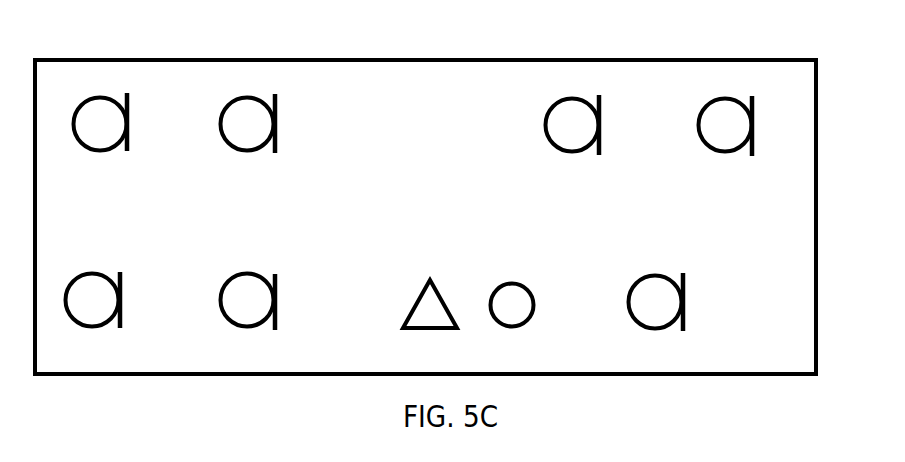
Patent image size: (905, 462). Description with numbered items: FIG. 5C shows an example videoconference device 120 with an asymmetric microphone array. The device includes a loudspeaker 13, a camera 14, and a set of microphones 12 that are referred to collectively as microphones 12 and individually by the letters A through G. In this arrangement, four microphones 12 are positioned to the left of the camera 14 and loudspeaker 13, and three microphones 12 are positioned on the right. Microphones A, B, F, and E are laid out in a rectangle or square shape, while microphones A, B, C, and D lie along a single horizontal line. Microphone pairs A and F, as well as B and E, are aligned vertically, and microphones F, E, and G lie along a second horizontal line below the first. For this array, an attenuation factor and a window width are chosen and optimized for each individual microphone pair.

The floor plan / area map 120 is at (335, 59).
The microphones 12 is at (128, 110).
The loudspeaker 13 is at (506, 281).
The camera 14 is at (420, 283).